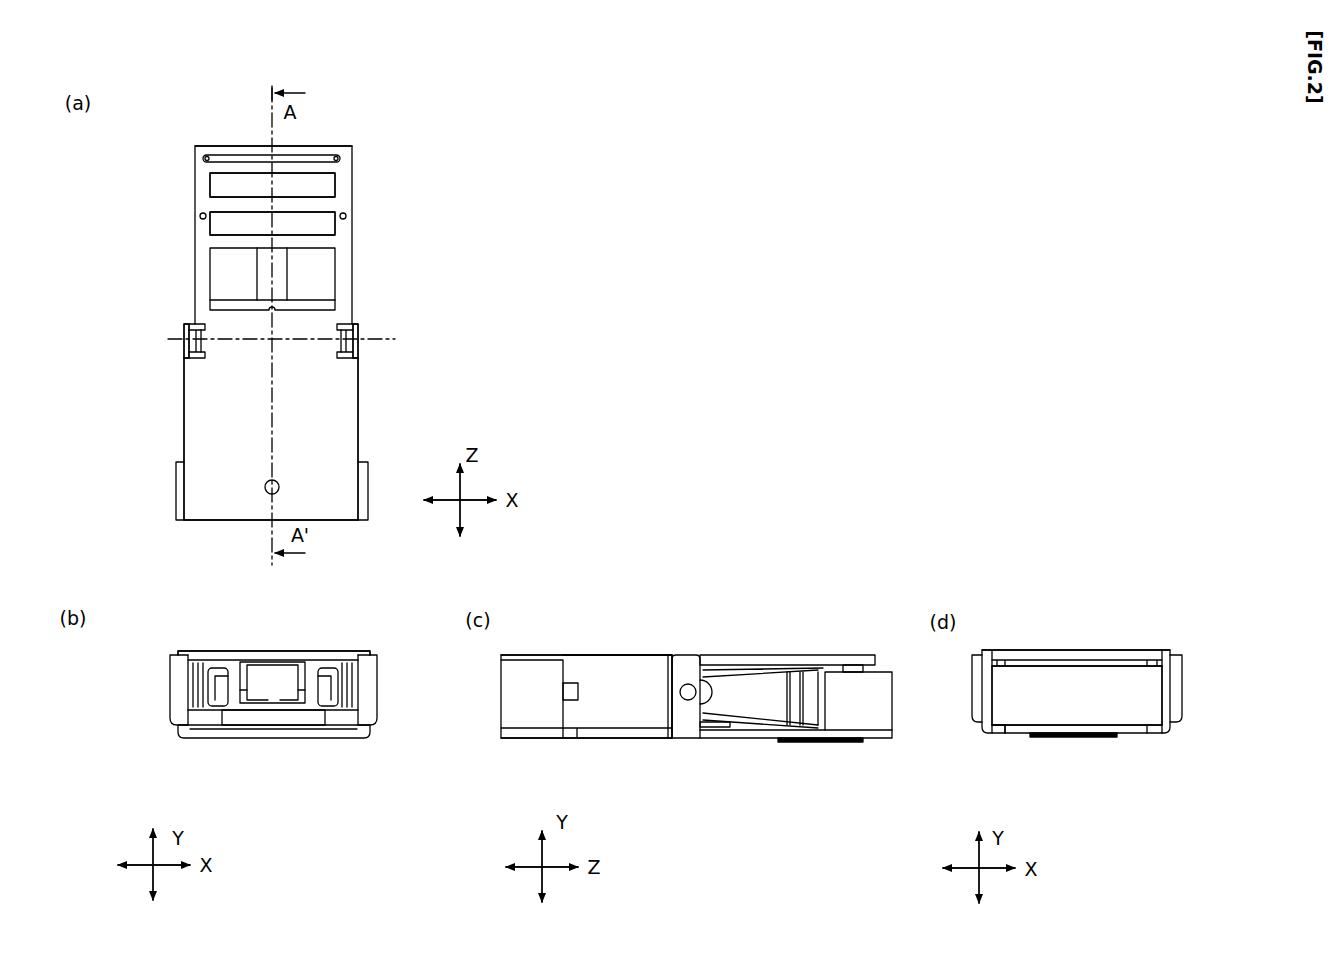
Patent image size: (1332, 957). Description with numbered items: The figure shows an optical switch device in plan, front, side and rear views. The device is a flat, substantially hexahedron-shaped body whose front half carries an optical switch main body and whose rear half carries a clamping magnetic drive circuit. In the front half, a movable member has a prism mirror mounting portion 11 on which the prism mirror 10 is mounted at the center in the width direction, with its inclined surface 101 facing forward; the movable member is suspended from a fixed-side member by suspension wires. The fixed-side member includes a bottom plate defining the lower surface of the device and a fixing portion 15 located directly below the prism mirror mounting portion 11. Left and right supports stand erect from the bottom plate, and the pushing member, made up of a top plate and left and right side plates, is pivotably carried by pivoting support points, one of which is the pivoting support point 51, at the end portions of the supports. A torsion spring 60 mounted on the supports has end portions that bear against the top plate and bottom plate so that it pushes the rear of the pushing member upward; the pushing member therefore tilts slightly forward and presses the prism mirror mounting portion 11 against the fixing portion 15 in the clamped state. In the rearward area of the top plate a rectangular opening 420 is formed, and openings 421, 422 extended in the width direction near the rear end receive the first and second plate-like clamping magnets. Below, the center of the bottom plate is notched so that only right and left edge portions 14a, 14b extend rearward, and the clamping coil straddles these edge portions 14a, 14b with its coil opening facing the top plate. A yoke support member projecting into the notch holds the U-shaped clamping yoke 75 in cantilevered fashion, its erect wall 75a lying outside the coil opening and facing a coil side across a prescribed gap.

The prism mirror 10 is at (201, 735).
The inclined surface 101 is at (262, 685).
The prism mirror mounting portion 11 is at (235, 678).
The right edge portion 14a is at (997, 730).
The left edge portion 14b is at (1152, 730).
The fixing portion 15 is at (233, 718).
The pivoting support point 51 is at (187, 347).
The torsion spring 60 is at (740, 662).
The clamping yoke 75 is at (757, 750).
The erect wall 75a is at (793, 700).
The rectangular opening 420 is at (210, 275).
The opening 421 is at (244, 212).
The opening 422 is at (300, 172).